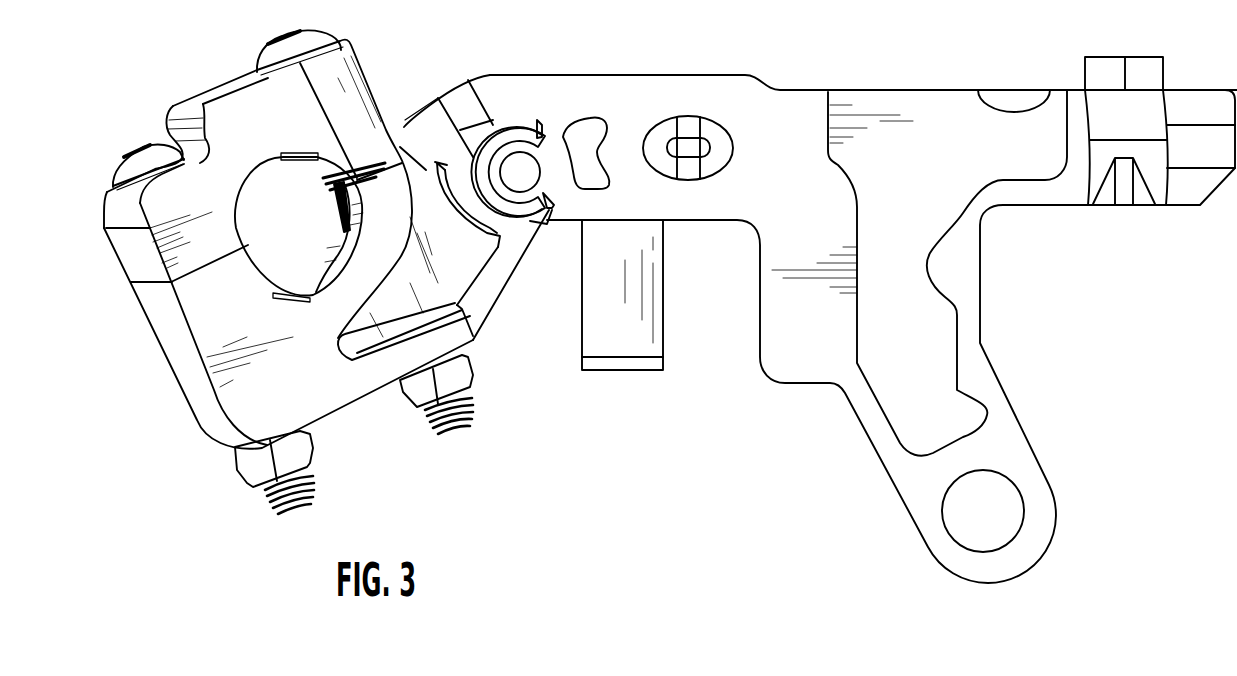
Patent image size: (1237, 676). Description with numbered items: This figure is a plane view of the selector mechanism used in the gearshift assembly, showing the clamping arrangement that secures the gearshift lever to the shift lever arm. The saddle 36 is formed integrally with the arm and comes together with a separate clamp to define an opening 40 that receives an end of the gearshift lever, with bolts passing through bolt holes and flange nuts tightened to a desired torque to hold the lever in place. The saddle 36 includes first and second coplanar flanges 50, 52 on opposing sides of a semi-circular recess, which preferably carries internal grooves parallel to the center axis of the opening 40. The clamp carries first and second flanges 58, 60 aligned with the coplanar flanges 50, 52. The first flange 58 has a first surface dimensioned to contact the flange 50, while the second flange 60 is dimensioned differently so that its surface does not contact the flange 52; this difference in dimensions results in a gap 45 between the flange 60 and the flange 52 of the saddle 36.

The saddle 36 is at (253, 383).
The opening 40 is at (305, 233).
The gap 45 is at (397, 126).
The first coplanar flange 50 is at (242, 301).
The second coplanar flange 52 is at (397, 220).
The first flange 58 is at (362, 123).
The second flange 60 is at (211, 251).